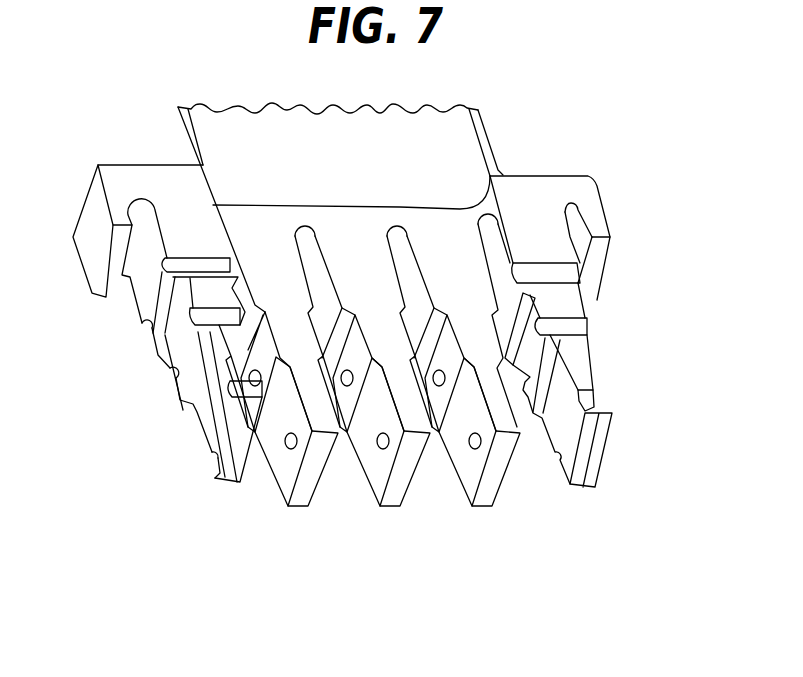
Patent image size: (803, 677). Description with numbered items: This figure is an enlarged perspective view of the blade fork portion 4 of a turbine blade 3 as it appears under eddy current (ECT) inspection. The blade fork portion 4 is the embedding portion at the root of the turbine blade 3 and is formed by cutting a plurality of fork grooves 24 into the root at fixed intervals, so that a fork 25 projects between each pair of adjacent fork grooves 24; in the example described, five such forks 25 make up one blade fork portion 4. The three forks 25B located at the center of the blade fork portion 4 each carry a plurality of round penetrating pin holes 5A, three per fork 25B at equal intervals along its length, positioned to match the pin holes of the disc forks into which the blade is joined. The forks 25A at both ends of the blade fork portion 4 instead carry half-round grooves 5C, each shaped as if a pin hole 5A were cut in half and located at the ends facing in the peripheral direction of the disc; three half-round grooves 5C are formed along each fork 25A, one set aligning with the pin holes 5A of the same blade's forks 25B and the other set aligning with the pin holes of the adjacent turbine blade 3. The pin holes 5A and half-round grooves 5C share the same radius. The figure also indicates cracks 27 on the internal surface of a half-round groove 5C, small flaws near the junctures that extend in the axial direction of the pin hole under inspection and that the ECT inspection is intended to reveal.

The turbine blade 3 is at (192, 141).
The blade fork portion 4 is at (532, 210).
The fork groove 24 is at (395, 238).
The fork 25 is at (342, 238).
The fork at end of blade fork portion 25A is at (200, 427).
The fork at center of blade fork portion 25B is at (477, 507).
The crack 27 is at (220, 270).
The pin hole 5A is at (290, 447).
The half-round groove 5C is at (173, 377).